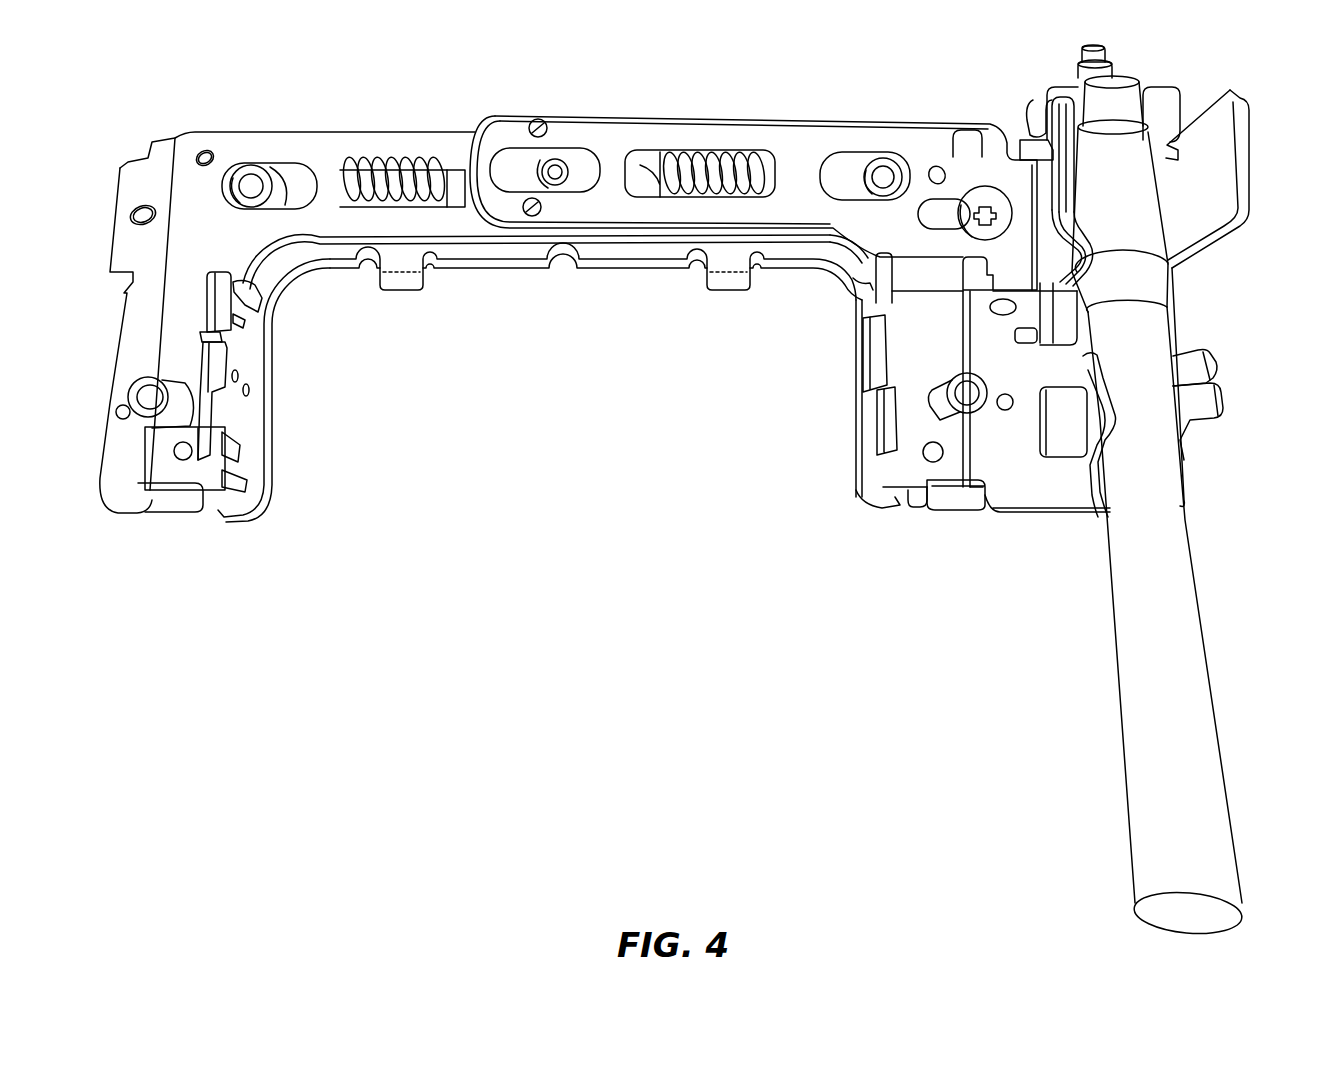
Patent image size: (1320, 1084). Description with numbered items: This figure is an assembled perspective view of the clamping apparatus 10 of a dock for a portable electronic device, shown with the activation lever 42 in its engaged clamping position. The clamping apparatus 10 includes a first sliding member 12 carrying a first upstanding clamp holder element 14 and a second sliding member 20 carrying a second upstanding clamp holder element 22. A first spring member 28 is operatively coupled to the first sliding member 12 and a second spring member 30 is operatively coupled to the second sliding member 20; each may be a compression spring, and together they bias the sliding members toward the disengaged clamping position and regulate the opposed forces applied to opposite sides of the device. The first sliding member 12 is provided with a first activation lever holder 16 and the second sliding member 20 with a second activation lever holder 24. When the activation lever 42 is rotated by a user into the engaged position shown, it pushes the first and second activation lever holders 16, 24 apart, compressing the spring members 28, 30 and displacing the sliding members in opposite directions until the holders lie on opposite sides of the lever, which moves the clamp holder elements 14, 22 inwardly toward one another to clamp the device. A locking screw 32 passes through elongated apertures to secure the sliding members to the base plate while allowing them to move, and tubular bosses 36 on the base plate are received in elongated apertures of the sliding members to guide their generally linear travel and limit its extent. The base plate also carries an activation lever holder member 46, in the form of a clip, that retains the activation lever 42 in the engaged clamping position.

The clamping apparatus 10 is at (304, 286).
The first sliding member 12 is at (296, 184).
The first upstanding clamp holder element 14 is at (276, 432).
The first activation lever holder 16 is at (1244, 130).
The second sliding member 20 is at (784, 134).
The second upstanding clamp holder element 22 is at (846, 440).
The second activation lever holder 24 is at (1047, 202).
The first spring member 28 is at (379, 151).
The second spring member 30 is at (700, 146).
The locking screw 32 is at (967, 192).
The tubular bosses 36 is at (249, 173).
The activation lever 42 is at (1212, 646).
The activation lever holder member 46 is at (1216, 348).